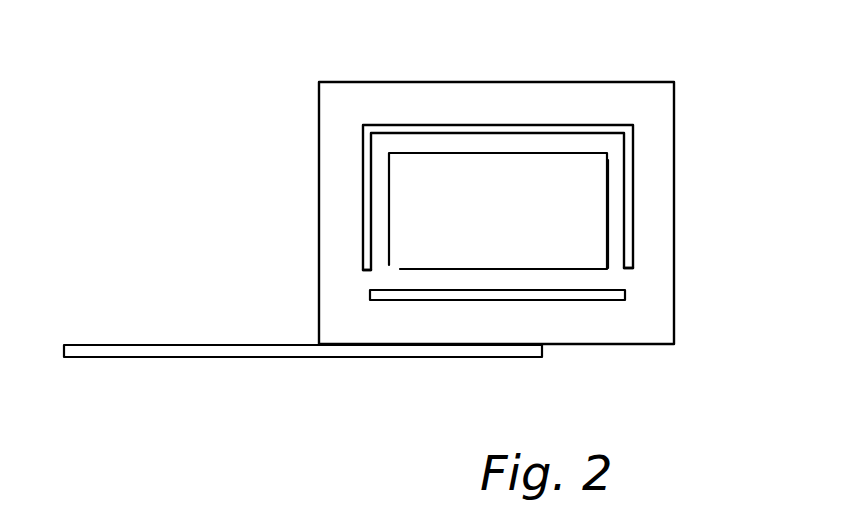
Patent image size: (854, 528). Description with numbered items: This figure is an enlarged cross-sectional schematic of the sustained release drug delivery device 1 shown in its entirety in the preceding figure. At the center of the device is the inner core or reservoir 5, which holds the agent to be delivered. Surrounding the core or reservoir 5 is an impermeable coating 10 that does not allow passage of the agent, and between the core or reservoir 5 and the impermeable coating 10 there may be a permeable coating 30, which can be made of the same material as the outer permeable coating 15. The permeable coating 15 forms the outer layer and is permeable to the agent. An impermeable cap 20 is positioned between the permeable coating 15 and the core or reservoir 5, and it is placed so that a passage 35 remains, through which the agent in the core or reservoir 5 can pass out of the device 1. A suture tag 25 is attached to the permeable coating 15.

The device assembly 1 is at (496, 215).
The inner core or reservoir 5 is at (597, 182).
The impermeable coating 10 is at (633, 190).
The permeable coating 15 is at (665, 215).
The impermeable cap 20 is at (590, 300).
The suture tag 25 is at (172, 346).
The permeable coating 30 is at (617, 248).
The passage 35 is at (625, 277).